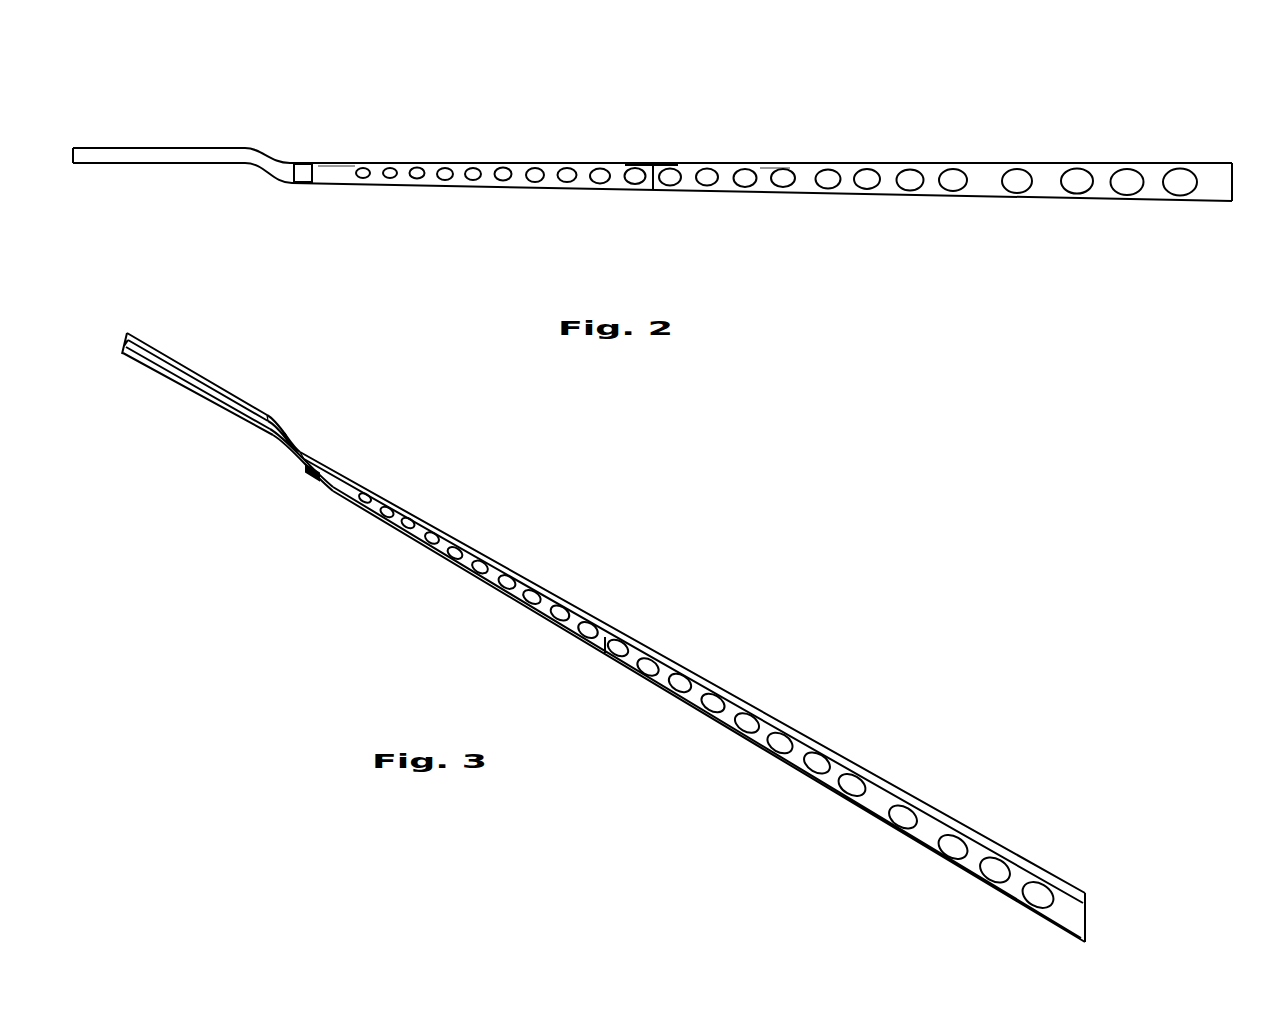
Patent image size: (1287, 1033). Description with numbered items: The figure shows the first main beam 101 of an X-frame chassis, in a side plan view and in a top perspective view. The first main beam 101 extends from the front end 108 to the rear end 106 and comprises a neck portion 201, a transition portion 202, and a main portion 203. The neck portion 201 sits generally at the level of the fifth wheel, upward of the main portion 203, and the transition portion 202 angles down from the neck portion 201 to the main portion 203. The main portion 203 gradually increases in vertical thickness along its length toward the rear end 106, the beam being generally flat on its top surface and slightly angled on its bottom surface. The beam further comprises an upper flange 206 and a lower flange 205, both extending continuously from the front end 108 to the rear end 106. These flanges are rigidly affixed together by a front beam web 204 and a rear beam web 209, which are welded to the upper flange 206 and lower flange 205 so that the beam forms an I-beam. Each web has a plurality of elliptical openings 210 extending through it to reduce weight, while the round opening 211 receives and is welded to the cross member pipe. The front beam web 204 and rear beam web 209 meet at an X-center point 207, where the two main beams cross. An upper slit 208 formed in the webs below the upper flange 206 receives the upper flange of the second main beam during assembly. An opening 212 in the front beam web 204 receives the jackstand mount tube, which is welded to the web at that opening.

In FIG. 2, the first main beam 101 is at (812, 77).
In FIG. 3, the first main beam 101 is at (705, 513).
In FIG. 2, the rear end 106 is at (1232, 162).
In FIG. 3, the rear end 106 is at (1085, 882).
In FIG. 2, the front end 108 is at (76, 146).
In FIG. 3, the front end 108 is at (130, 330).
In FIG. 2, the neck portion 201 is at (170, 135).
In FIG. 3, the neck portion 201 is at (210, 348).
In FIG. 2, the transition portion 202 is at (268, 140).
In FIG. 3, the transition portion 202 is at (302, 425).
In FIG. 2, the main portion 203 is at (458, 155).
In FIG. 3, the main portion 203 is at (438, 520).
In FIG. 2, the front beam web 204 is at (345, 172).
In FIG. 3, the front beam web 204 is at (338, 485).
In FIG. 2, the lower flange 205 is at (487, 192).
In FIG. 3, the lower flange 205 is at (1013, 902).
In FIG. 2, the upper flange 206 is at (552, 162).
In FIG. 3, the upper flange 206 is at (1062, 886).
In FIG. 2, the X-center point 207 is at (653, 190).
In FIG. 2, the upper slit 208 is at (666, 162).
In FIG. 2, the rear beam web 209 is at (765, 172).
In FIG. 3, the rear beam web 209 is at (925, 835).
In FIG. 2, the openings 210 is at (417, 174).
In FIG. 2, the round opening 211 is at (1010, 176).
In FIG. 2, the opening 212 is at (303, 184).